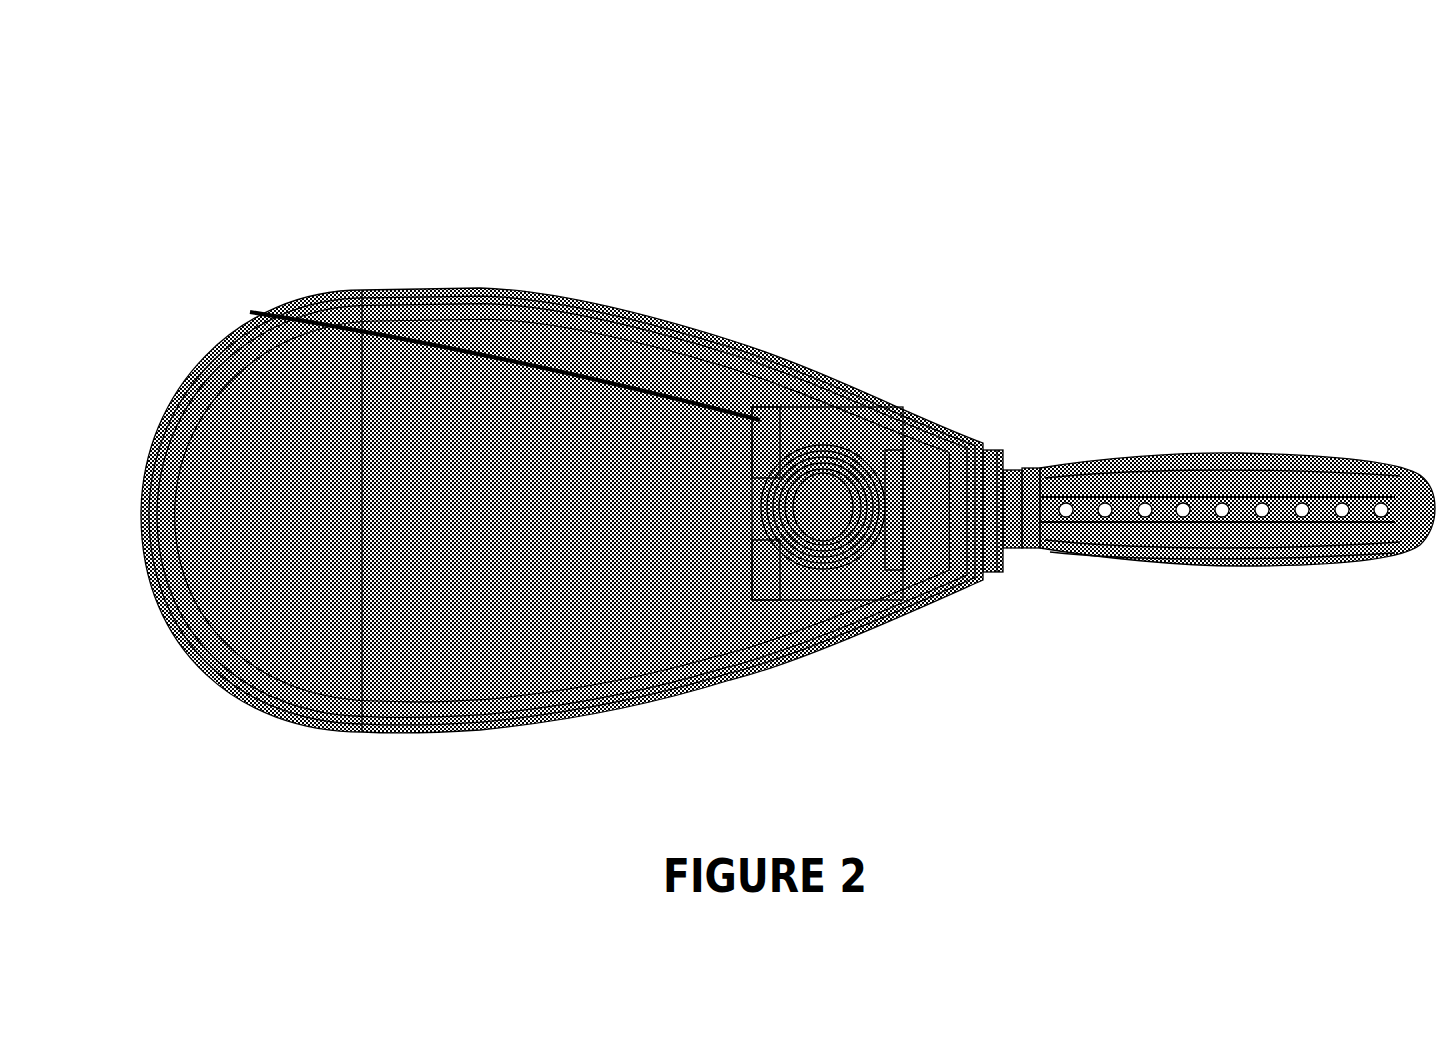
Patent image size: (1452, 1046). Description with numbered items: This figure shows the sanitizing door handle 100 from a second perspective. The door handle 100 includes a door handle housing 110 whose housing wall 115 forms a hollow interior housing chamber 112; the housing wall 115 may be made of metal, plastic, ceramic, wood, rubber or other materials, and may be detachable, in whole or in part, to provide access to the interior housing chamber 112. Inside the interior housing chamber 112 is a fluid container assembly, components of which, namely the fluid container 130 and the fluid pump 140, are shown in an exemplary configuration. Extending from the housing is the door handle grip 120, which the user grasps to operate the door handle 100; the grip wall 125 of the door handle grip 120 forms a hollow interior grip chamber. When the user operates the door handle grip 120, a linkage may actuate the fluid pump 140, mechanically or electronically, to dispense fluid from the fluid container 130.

The sanitizing door handle 100 is at (786, 380).
The door handle housing 110 is at (579, 420).
The interior housing chamber 112 is at (726, 372).
The housing wall 115 is at (273, 308).
The door handle grip 120 is at (1228, 527).
The grip wall 125 is at (1245, 565).
The fluid container 130 is at (492, 475).
The fluid pump 140 is at (830, 487).